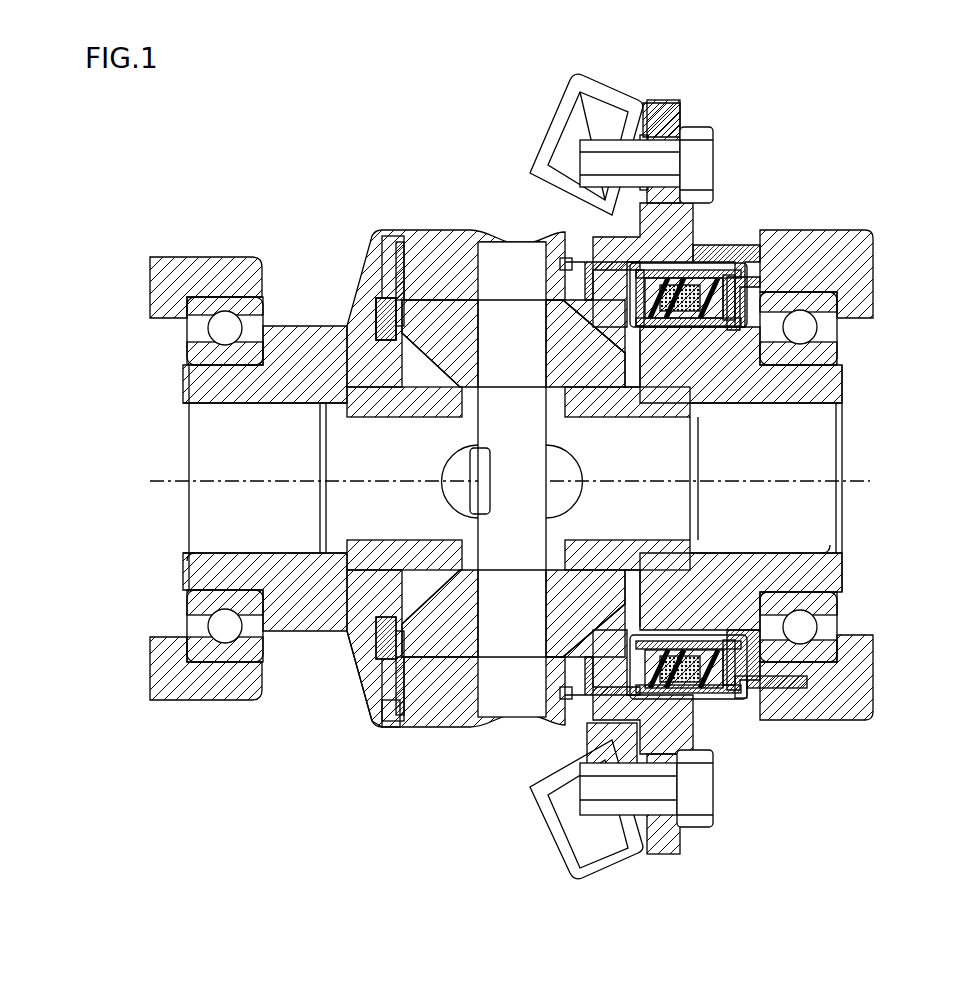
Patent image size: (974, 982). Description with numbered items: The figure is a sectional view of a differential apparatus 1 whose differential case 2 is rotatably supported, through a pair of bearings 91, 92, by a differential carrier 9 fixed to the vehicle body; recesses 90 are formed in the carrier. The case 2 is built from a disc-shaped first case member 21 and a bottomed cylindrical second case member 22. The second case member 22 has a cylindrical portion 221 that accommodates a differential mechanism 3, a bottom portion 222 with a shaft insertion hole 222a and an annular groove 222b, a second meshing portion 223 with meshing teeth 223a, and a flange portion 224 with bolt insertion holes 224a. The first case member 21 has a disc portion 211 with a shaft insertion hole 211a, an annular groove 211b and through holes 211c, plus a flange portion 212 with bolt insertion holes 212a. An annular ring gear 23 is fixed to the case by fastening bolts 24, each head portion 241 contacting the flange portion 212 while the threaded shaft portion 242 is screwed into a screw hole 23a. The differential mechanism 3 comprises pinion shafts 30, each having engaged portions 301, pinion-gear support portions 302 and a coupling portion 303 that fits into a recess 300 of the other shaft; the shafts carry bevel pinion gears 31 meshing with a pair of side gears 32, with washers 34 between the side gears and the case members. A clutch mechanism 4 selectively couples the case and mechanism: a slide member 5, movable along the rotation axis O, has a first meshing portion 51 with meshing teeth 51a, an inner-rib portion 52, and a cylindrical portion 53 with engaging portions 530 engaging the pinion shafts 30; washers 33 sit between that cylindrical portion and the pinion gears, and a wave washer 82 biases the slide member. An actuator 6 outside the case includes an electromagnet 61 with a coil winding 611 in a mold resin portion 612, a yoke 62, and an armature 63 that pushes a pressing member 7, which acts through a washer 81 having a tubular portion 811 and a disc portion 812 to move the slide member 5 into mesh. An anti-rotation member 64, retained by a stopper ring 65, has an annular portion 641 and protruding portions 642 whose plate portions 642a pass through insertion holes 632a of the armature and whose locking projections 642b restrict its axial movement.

The differential apparatus 1 is at (250, 185).
The differential case 2 is at (178, 578).
The differential mechanism 3 is at (305, 441).
The clutch mechanism 4 is at (742, 712).
The slide member 5 is at (432, 318).
The actuator 6 is at (722, 253).
The pressing member 7 is at (590, 268).
The differential carrier 9 is at (190, 257).
The first case member 21 is at (848, 430).
The second case member 22 is at (340, 722).
The ring gear 23 is at (575, 95).
The screw hole 23a is at (600, 130).
The fastening bolt 24 is at (713, 820).
The pinion shaft 30 is at (478, 486).
The pinion gear 31 is at (450, 320).
The side gear 32 is at (352, 556).
The washer 33 is at (425, 310).
The washer 34 is at (352, 620).
The first meshing portion 51 is at (392, 250).
The meshing teeth 51a is at (396, 265).
The inner-rib portion 52 is at (385, 300).
The cylindrical portion 53 is at (400, 700).
The electromagnet 61 is at (798, 163).
The yoke 62 is at (668, 320).
The armature 63 is at (748, 262).
The anti-rotation member 64 is at (722, 700).
The stopper ring 65 is at (730, 322).
The washer 81 is at (568, 262).
The wave washer 82 is at (378, 320).
The recess 90 is at (800, 690).
The bearing 91 is at (840, 350).
The bearing 92 is at (187, 352).
The disc portion 211 is at (720, 565).
The shaft insertion hole 211a is at (830, 550).
The annular groove 211b is at (660, 800).
The through hole 211c is at (615, 760).
The flange portion 212 is at (672, 120).
The bolt insertion hole 212a is at (668, 160).
The cylindrical portion 221 is at (472, 230).
The bottom portion 222 is at (355, 695).
The shaft insertion hole 222a is at (200, 548).
The annular groove 222b is at (355, 650).
The second meshing portion 223 is at (392, 727).
The meshing teeth 223a is at (378, 722).
The flange portion 224 is at (662, 103).
The bolt insertion hole 224a is at (645, 145).
The head portion 241 is at (705, 130).
The shaft portion 242 is at (620, 165).
The recess 300 is at (476, 452).
The engaged portion 301 is at (512, 480).
The pinion-gear support portion 302 is at (512, 477).
The coupling portion 303 is at (530, 462).
The engaging portion 530 is at (392, 660).
The coil winding 611 is at (700, 268).
The mold resin portion 612 is at (712, 272).
The insertion hole 632a is at (742, 698).
The annular portion 641 is at (690, 320).
The protruding portion 642 is at (745, 290).
The plate portion 642a is at (790, 678).
The locking projection 642b is at (760, 660).
The tubular portion 811 is at (570, 700).
The disc portion 812 is at (595, 690).
The rotation axis O is at (510, 464).